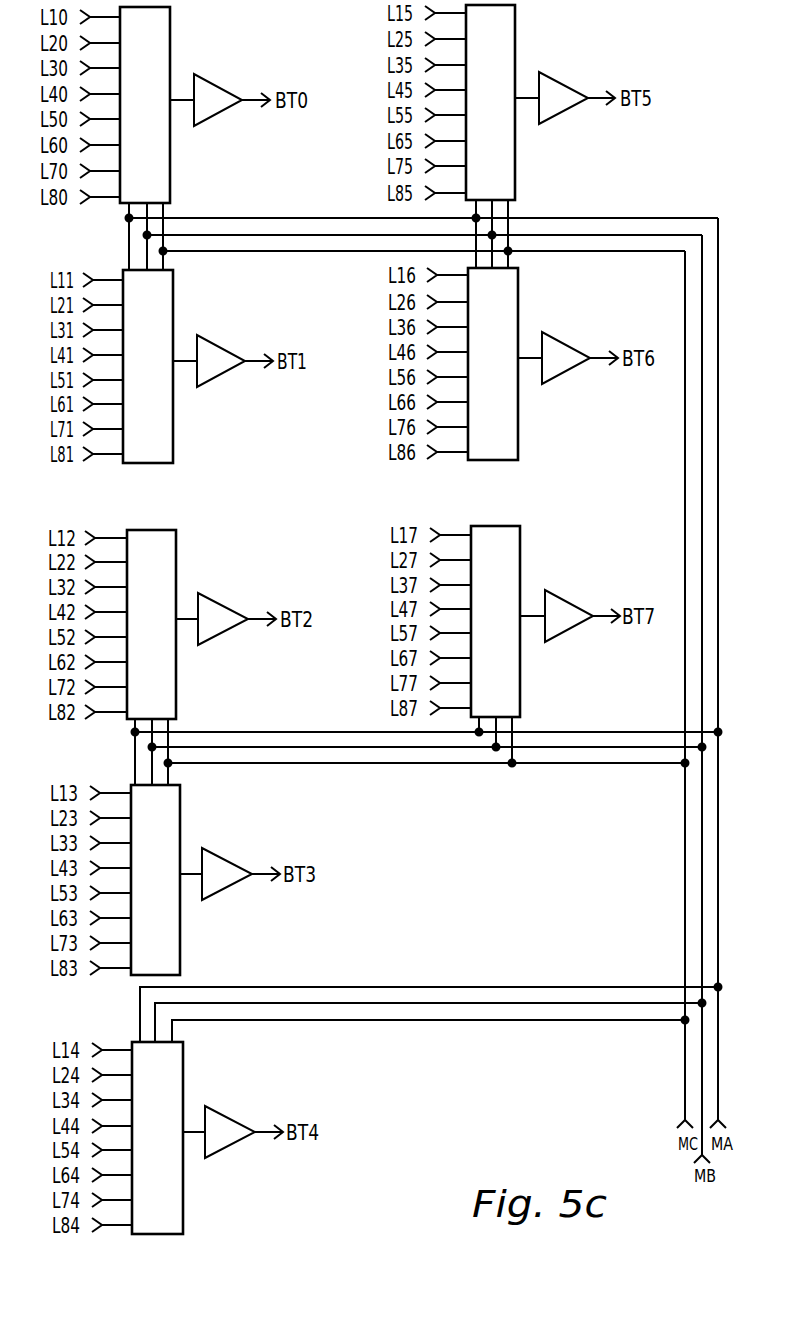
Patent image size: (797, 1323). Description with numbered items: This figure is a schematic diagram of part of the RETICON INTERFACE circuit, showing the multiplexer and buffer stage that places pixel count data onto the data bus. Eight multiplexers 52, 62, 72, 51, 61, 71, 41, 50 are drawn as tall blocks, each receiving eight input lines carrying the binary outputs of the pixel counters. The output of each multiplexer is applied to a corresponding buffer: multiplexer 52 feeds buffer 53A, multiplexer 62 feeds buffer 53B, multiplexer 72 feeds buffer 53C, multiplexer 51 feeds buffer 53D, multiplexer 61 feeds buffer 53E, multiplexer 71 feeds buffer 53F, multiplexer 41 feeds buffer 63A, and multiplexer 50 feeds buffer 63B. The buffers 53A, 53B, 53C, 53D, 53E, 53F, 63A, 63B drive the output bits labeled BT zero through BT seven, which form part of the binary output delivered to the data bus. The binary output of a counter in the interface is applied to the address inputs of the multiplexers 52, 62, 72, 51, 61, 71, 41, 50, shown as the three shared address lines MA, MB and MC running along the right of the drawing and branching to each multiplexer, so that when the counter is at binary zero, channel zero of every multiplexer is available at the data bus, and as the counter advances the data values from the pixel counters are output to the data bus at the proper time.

The multiplexer 52 is at (125, 105).
The multiplexer 62 is at (128, 366).
The multiplexer 72 is at (130, 624).
The multiplexer 51 is at (135, 880).
The multiplexer 61 is at (137, 1138).
The multiplexer 71 is at (470, 102).
The multiplexer 41 is at (472, 364).
The multiplexer 50 is at (475, 621).
The buffer 53A is at (206, 100).
The buffer 53B is at (209, 361).
The buffer 53C is at (212, 619).
The buffer 53D is at (216, 874).
The buffer 53E is at (219, 1132).
The buffer 53F is at (551, 98).
The buffer 63A is at (554, 358).
The buffer 63B is at (556, 616).